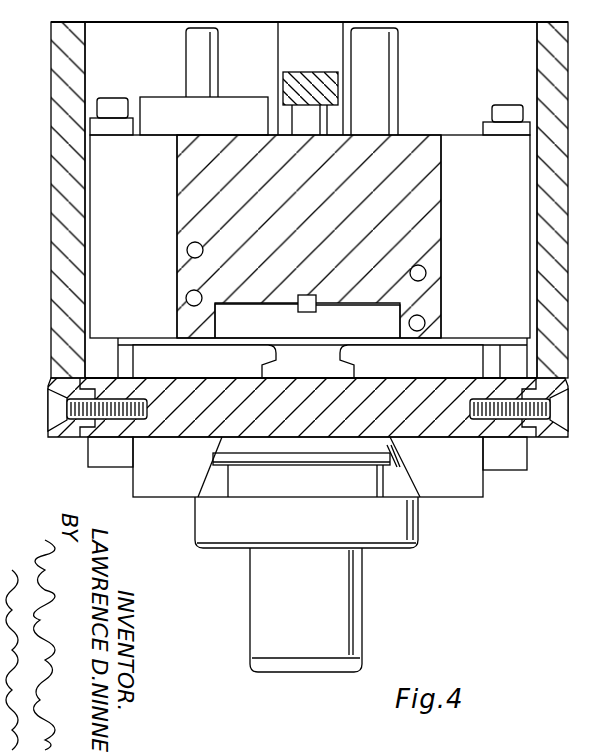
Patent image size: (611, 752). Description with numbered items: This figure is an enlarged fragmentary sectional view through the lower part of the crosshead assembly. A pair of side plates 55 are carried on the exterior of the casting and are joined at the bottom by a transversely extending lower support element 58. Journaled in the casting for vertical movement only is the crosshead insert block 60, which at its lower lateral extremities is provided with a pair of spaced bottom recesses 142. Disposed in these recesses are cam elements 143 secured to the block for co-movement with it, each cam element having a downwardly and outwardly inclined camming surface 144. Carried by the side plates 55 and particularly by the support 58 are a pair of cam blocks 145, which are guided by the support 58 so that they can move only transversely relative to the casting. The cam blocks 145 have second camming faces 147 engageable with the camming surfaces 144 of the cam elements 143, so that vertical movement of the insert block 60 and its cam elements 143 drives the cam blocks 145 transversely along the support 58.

The side plates 55 is at (53, 323).
The lower support element 58 is at (183, 430).
The crosshead insert block 60 is at (427, 212).
The bottom recesses 142 is at (346, 308).
The cam elements 143 is at (316, 348).
The camming surfaces 144 is at (349, 363).
The cam blocks 145 is at (133, 487).
The second camming faces 147 is at (197, 483).